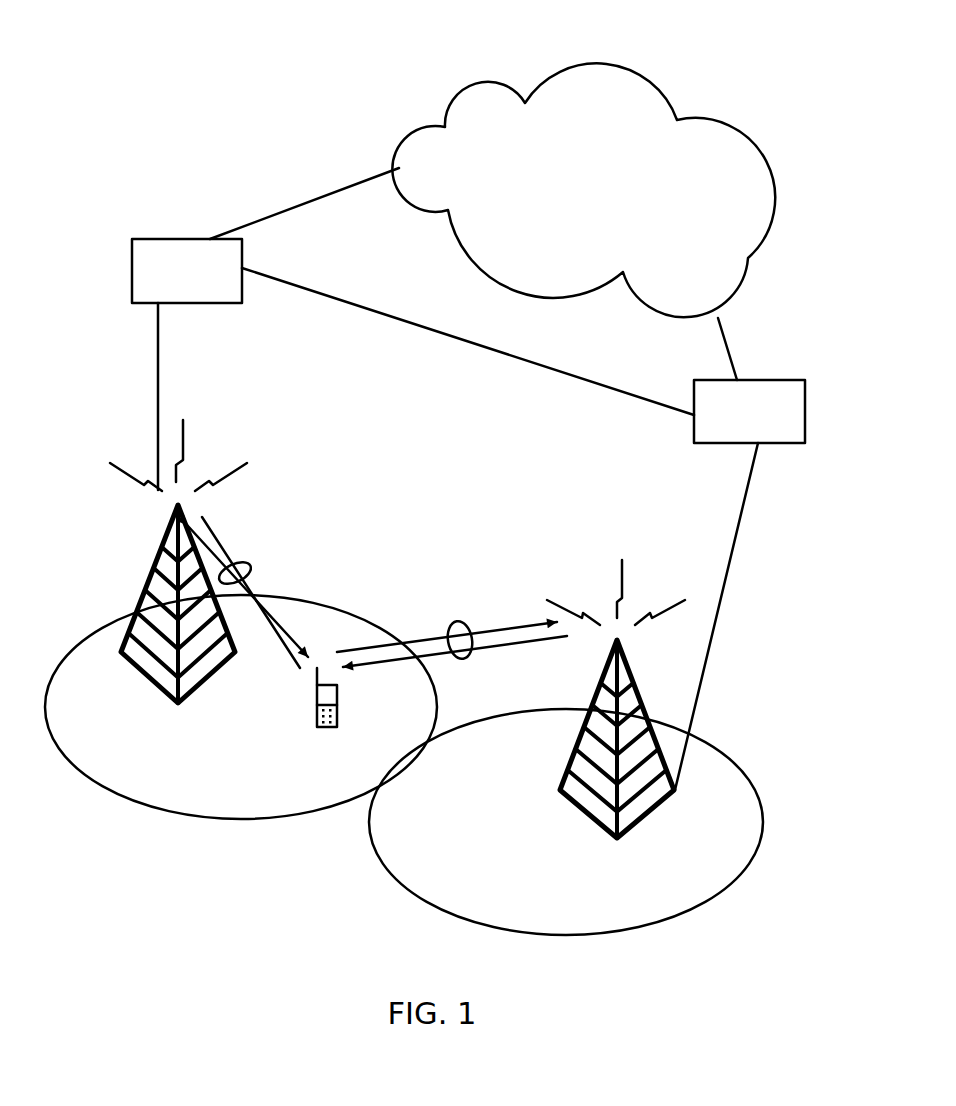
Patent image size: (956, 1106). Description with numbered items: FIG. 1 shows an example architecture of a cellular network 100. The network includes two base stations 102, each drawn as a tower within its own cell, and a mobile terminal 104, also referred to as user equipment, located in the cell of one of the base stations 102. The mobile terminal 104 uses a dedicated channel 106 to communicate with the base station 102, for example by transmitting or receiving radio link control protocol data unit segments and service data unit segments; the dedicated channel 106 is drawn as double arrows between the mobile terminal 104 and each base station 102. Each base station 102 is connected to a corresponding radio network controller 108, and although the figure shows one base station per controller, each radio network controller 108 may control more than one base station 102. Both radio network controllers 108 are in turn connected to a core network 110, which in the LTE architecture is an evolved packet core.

The cellular network 100 is at (310, 58).
The base station 102 is at (117, 562).
The mobile terminal 104 is at (318, 710).
The dedicated channel 106 is at (248, 565).
The radio network controller 108 is at (166, 238).
The core network 110 is at (767, 142).